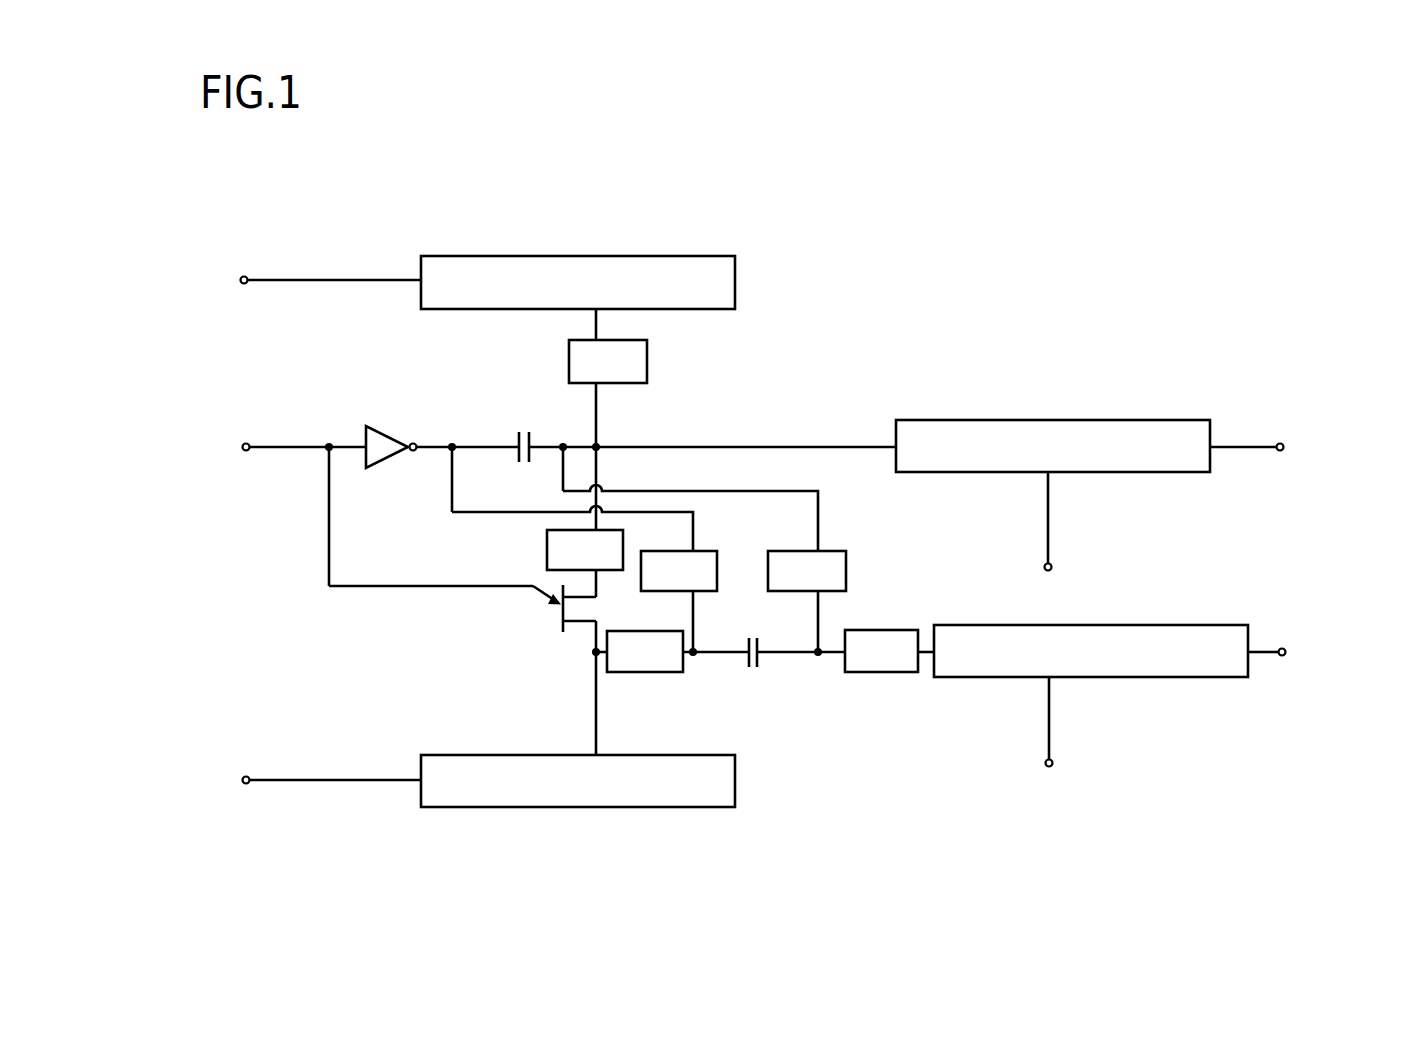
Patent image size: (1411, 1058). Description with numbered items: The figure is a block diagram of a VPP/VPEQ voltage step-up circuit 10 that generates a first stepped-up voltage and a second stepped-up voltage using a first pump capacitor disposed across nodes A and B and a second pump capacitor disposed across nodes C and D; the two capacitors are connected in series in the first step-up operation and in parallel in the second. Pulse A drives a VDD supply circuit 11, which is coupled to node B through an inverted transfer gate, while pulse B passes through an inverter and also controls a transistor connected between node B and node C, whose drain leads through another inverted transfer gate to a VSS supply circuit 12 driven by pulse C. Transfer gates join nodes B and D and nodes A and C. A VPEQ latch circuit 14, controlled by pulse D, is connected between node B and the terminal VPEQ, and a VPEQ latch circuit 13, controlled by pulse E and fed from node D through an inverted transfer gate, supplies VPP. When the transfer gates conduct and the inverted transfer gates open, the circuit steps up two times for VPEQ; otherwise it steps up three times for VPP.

The voltage step-up circuit 10 is at (1052, 210).
The VDD supply circuit 11 is at (593, 256).
The VSS supply circuit 12 is at (660, 755).
The VPEQ latch circuit 13 is at (1137, 618).
The VPEQ latch circuit 14 is at (1058, 420).